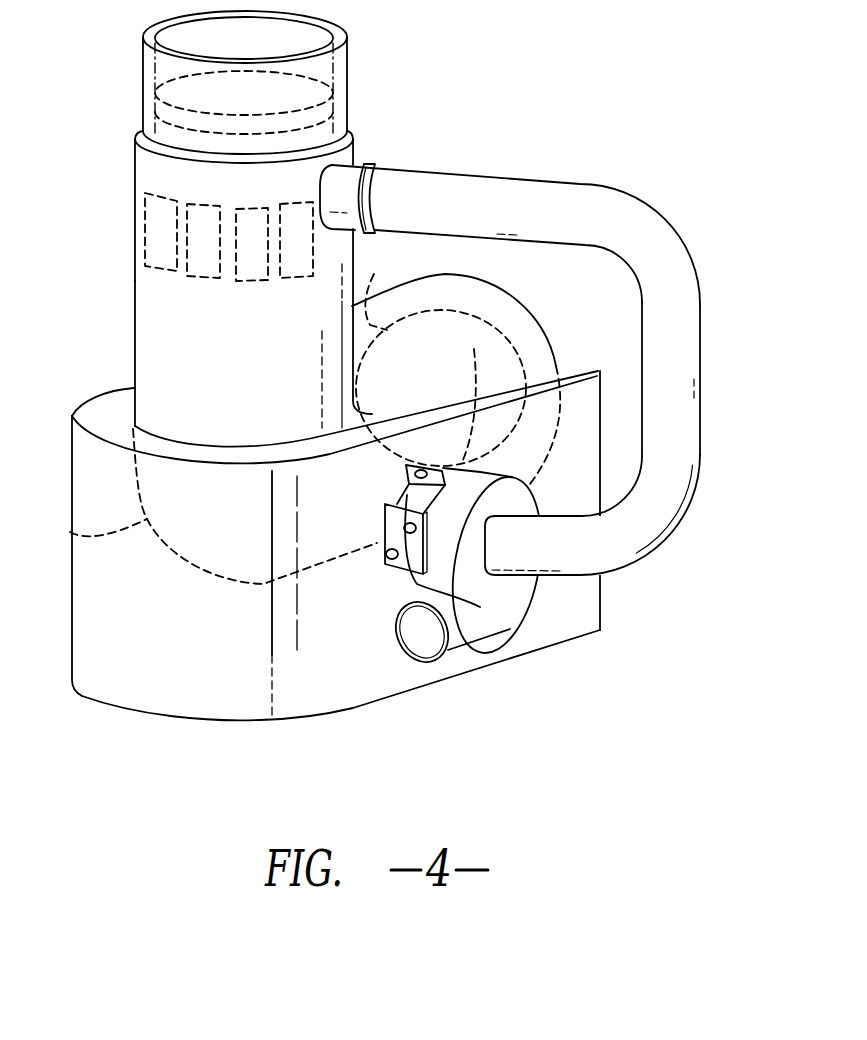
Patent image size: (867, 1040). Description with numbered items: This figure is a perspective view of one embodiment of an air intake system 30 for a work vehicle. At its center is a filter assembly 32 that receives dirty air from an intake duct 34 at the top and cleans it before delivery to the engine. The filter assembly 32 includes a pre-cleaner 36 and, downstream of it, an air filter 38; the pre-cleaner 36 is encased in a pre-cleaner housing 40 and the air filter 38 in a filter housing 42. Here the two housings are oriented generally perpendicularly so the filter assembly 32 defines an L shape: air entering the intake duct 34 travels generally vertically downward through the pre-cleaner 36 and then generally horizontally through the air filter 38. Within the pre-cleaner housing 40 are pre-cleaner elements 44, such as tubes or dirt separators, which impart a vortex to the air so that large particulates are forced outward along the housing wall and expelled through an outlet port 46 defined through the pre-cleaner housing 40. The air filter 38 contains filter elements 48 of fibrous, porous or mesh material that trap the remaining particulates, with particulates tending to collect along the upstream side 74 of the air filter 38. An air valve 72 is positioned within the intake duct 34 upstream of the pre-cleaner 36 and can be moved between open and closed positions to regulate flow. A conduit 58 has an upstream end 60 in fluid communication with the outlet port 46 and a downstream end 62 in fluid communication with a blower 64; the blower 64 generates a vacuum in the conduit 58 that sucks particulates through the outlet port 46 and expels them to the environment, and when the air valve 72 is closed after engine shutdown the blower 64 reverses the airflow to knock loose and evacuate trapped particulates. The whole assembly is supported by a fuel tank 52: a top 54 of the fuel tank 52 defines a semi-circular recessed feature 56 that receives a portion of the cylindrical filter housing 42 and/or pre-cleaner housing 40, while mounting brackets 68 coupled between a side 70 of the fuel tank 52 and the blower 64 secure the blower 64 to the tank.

The air intake system 30 is at (500, 57).
The filter assembly 32 is at (116, 336).
The intake duct 34 is at (135, 71).
The pre-cleaner 36 is at (131, 227).
The air filter 38 is at (515, 336).
The pre-cleaner housing 40 is at (127, 288).
The filter housing 42 is at (510, 303).
The pre-cleaner elements 44 is at (195, 196).
The outlet port 46 is at (350, 157).
The filter elements 48 is at (460, 303).
The fuel tank 52 is at (127, 641).
The top of the fuel tank 54 is at (102, 405).
The recessed feature 56 is at (62, 524).
The conduit 58 is at (694, 360).
The upstream end 60 is at (410, 165).
The downstream end 62 is at (564, 551).
The blower 64 is at (455, 614).
The mounting brackets 68 is at (385, 528).
The side of the fuel tank 70 is at (336, 680).
The air valve 72 is at (159, 118).
The upstream side of the air filter 74 is at (368, 275).